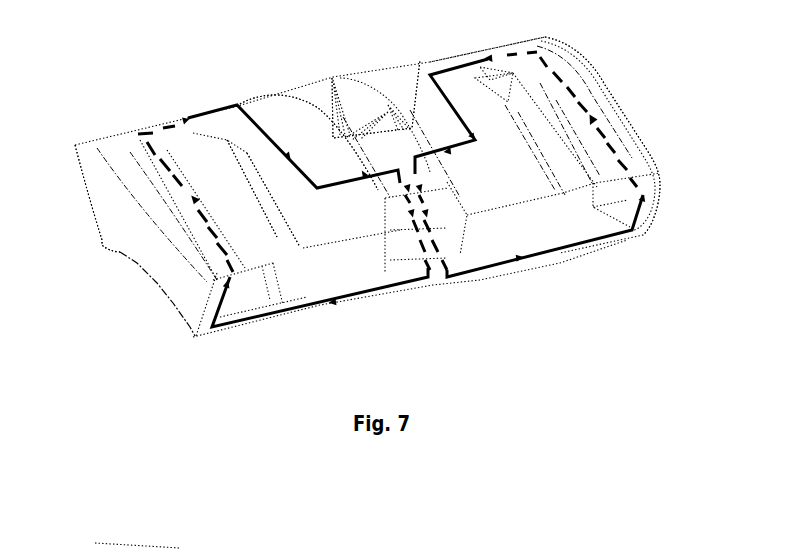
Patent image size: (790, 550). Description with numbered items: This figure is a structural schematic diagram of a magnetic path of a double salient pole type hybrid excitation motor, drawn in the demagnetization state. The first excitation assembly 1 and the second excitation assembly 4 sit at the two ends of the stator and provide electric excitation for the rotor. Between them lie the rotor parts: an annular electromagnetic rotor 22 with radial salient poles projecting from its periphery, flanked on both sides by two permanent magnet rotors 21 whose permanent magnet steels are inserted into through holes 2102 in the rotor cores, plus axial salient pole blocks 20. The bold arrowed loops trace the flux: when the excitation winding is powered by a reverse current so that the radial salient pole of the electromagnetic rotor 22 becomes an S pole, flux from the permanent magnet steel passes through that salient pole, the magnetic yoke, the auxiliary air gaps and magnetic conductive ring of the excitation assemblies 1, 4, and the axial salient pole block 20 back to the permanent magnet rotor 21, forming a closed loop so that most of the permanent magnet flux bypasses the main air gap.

The first excitation assembly 1 is at (122, 213).
The axial salient pole blocks 20 is at (467, 50).
The permanent magnet rotors 21 is at (274, 104).
The electromagnetic rotor 22 is at (387, 150).
The second excitation assembly 4 is at (647, 186).
The through holes 2102 is at (277, 237).